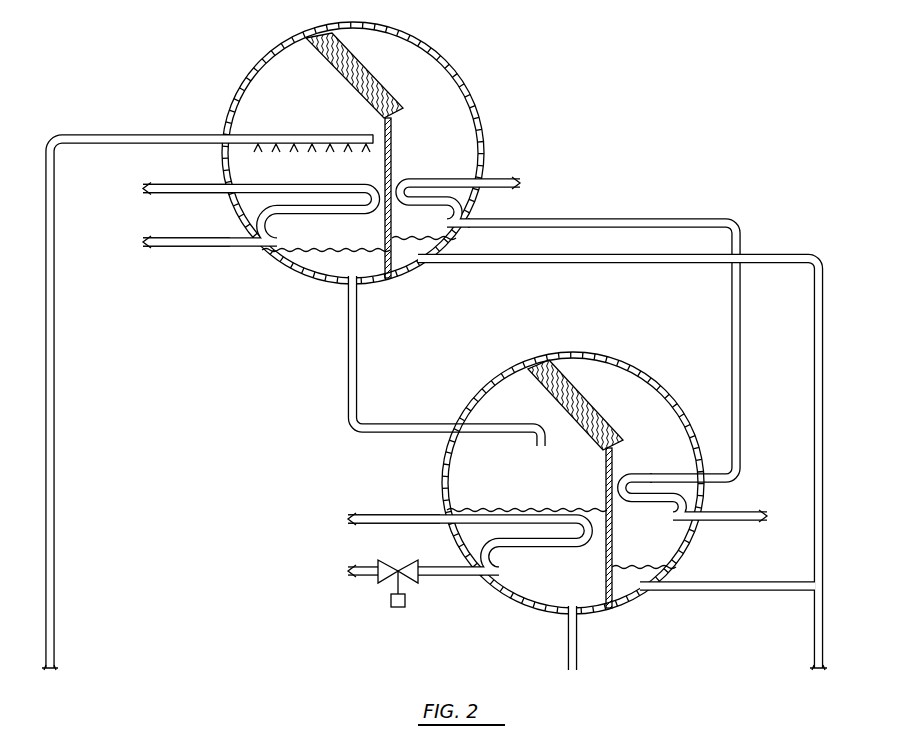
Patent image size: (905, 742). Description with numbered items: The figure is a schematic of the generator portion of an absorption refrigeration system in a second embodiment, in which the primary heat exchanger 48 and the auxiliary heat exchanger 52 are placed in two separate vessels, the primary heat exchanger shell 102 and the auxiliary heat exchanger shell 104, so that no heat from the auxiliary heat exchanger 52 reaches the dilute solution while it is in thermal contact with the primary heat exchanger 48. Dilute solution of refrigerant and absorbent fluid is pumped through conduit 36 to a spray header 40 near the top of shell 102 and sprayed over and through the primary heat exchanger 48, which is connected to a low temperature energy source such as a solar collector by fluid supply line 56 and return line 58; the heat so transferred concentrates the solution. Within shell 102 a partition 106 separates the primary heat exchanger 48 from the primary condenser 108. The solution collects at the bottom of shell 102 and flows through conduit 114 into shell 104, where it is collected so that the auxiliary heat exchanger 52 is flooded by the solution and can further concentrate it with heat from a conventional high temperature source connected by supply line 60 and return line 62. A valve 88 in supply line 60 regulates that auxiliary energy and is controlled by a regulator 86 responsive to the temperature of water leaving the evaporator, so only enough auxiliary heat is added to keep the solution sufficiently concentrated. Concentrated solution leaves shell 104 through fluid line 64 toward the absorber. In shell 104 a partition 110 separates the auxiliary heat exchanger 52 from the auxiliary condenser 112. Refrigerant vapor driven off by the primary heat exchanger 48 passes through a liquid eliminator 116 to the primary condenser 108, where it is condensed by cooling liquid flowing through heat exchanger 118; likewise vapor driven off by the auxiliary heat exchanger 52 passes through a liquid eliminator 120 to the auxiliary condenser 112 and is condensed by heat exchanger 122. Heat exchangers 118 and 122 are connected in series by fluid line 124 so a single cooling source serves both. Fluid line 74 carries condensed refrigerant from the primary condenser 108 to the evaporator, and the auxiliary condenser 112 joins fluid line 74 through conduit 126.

The conduit 36 is at (55, 490).
The spray header 40 is at (328, 130).
The primary heat exchanger 48 is at (313, 247).
The auxiliary heat exchanger 52 is at (535, 578).
The fluid supply line 56 is at (160, 236).
The fluid return line 58 is at (158, 183).
The supply line 60 is at (360, 578).
The return line 62 is at (383, 515).
The fluid line 64 is at (568, 650).
The fluid line 74 is at (775, 253).
The regulator 86 is at (388, 604).
The valve 88 is at (398, 565).
The primary heat exchanger shell 102 is at (262, 58).
The auxiliary heat exchanger shell 104 is at (490, 382).
The partition 106 is at (400, 128).
The primary condenser 108 is at (417, 198).
The partition 110 is at (602, 470).
The auxiliary condenser 112 is at (641, 527).
The conduit 114 is at (348, 383).
The liquid eliminator 116 is at (357, 55).
The heat exchanger 118 is at (442, 175).
The liquid eliminator 120 is at (582, 395).
The heat exchanger 122 is at (660, 528).
The fluid line 124 is at (605, 218).
The conduit 126 is at (700, 590).